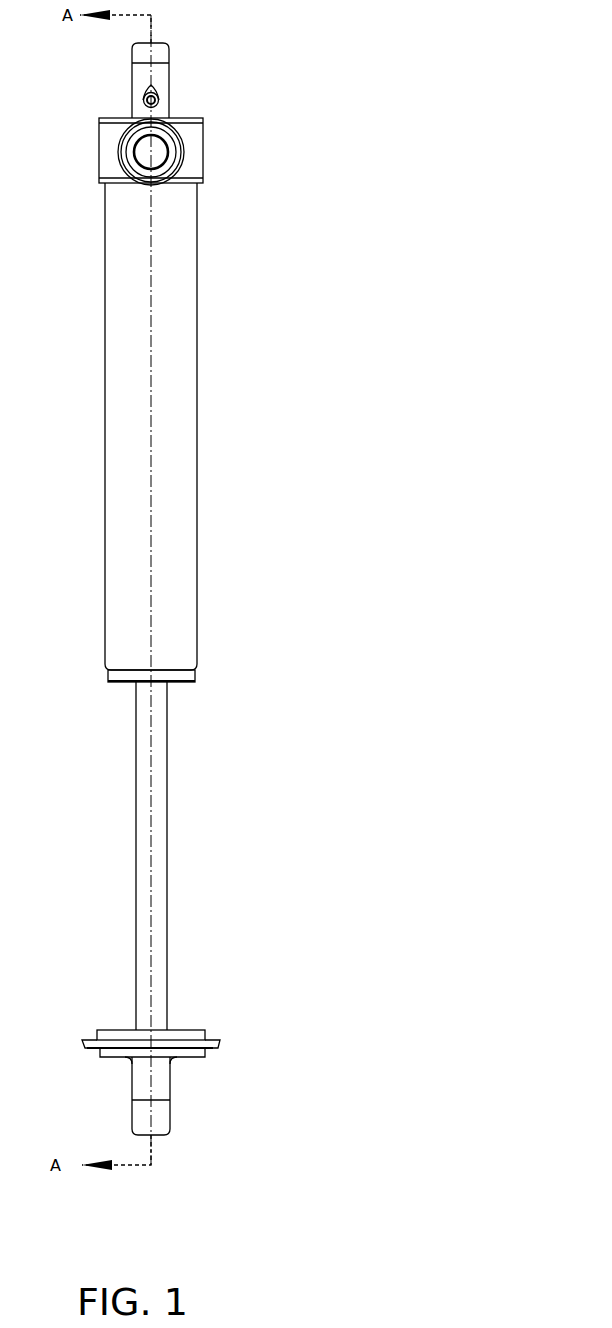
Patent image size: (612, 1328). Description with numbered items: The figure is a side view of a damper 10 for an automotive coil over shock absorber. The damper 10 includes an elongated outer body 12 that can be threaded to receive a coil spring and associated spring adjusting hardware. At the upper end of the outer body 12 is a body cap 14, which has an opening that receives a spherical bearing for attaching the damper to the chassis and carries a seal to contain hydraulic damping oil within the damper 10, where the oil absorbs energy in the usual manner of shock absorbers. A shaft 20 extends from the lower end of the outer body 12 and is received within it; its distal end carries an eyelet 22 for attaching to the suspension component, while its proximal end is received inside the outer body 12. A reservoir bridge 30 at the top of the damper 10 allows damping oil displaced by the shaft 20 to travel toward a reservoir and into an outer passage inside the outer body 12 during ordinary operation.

The damper 10 is at (260, 581).
The outer body 12 is at (197, 415).
The body cap 14 is at (170, 78).
The shaft 20 is at (249, 908).
The eyelet 22 is at (172, 1110).
The reservoir bridge 30 is at (180, 142).